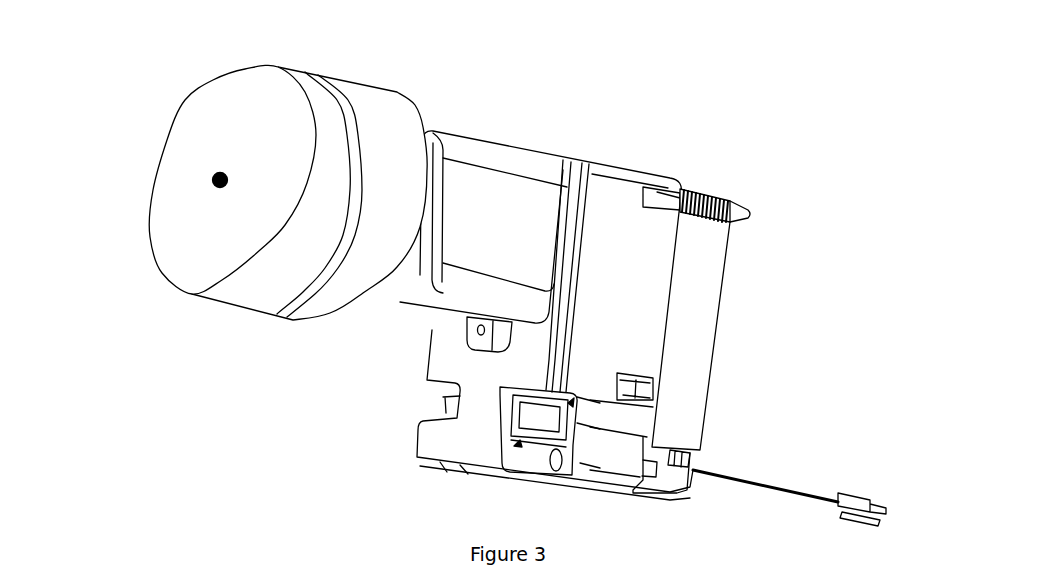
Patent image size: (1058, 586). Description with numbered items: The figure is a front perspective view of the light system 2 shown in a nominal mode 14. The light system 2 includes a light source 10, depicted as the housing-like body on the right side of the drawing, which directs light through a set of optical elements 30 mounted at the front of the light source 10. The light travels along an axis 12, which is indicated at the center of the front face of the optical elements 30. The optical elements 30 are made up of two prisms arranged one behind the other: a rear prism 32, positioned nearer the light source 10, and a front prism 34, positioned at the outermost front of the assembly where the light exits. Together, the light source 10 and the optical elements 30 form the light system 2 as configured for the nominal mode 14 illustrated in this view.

The light system 2 is at (487, 264).
The light source 10 is at (643, 177).
The axis 12 is at (213, 180).
The nominal mode 14 is at (808, 203).
The optical elements 30 is at (318, 232).
The rear prism 32 is at (312, 310).
The front prism 34 is at (230, 300).